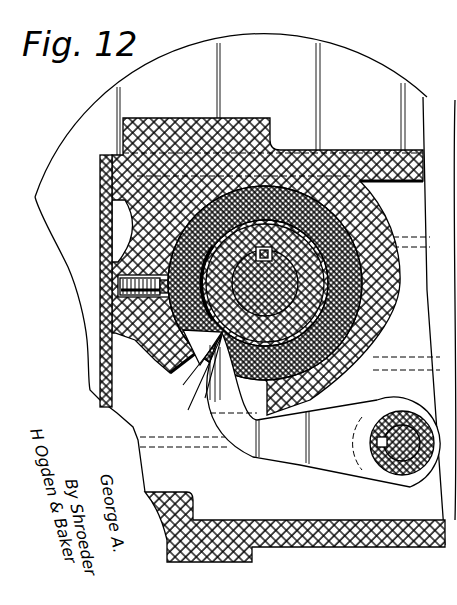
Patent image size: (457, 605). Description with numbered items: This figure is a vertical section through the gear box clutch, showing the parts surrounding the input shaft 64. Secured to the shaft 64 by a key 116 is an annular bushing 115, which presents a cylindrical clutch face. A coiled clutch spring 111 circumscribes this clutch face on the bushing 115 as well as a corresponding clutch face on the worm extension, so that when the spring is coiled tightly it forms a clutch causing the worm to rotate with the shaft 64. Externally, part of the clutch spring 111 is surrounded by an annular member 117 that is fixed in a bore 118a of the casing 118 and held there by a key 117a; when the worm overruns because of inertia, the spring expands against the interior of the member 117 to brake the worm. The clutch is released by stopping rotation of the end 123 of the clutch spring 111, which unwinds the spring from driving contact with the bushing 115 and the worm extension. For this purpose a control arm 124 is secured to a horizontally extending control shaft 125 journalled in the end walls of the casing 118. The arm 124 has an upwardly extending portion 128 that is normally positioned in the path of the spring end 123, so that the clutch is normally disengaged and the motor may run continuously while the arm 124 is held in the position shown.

The input shaft 64 is at (270, 283).
The coiled clutch spring 111 is at (140, 330).
The annular bushing 115 is at (304, 223).
The key 116 is at (273, 250).
The annular member 117 is at (240, 190).
The key 117a is at (140, 303).
The casing 118 is at (287, 548).
The bore 118a is at (185, 229).
The end of clutch spring 123 is at (193, 353).
The control arm 124 is at (275, 437).
The control shaft 125 is at (400, 447).
The upwardly extending portion 128 is at (184, 381).